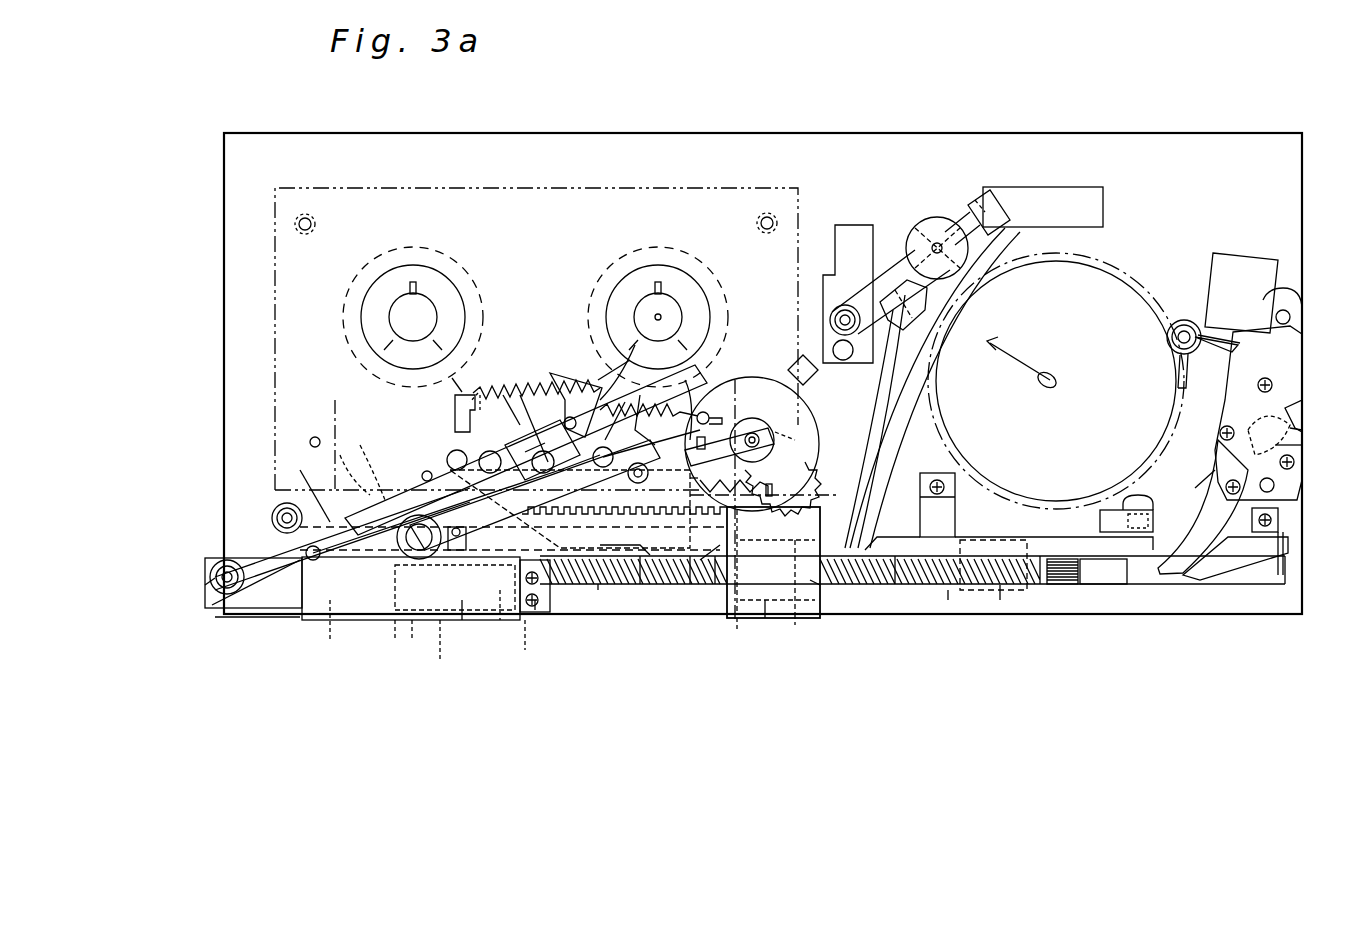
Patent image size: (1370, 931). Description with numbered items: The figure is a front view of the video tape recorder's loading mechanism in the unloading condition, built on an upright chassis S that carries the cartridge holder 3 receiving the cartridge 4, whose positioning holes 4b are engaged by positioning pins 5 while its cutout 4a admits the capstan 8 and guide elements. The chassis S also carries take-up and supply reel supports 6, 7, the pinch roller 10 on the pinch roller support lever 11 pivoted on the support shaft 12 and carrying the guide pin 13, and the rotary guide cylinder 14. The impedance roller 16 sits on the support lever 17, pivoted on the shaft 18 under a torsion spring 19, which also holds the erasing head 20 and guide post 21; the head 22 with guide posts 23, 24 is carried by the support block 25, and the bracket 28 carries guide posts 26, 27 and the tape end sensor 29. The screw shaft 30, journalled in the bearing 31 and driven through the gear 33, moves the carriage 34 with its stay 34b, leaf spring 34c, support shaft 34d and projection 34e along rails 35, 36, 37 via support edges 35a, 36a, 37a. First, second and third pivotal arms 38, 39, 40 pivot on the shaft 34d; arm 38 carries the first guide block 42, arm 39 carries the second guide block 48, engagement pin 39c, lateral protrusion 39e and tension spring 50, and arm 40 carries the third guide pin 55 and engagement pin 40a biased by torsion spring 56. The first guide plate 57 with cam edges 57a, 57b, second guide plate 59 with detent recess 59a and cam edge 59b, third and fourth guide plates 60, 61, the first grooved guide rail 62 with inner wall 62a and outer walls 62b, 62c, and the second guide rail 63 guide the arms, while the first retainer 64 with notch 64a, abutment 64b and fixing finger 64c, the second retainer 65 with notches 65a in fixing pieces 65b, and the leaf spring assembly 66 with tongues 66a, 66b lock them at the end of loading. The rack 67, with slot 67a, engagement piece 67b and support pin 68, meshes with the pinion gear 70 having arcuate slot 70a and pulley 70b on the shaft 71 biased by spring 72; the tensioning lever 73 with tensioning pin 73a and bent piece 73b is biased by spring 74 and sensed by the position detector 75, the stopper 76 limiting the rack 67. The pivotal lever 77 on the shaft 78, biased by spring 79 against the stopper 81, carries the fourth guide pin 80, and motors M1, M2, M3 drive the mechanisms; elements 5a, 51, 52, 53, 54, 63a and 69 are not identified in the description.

The upright chassis S is at (931, 132).
The cartridge holder 3 is at (1012, 552).
The video tape cartridge 4 is at (272, 266).
The cutout 4a is at (385, 460).
The positioning holes 4b is at (303, 218).
The positioning pins 5 is at (311, 218).
The pin 5a is at (309, 442).
The take-up reel support 6 is at (362, 318).
The supply reel support 7 is at (632, 280).
The capstan 8 is at (447, 440).
The pinch roller 10 is at (408, 560).
The pinch roller support lever 11 is at (312, 446).
The support shaft 12 is at (280, 503).
The guide pin 13 is at (446, 600).
The upper or rotary guide cylinder 14 is at (1140, 455).
The impedance roller 16 is at (922, 229).
The pivotable support lever 17 is at (880, 292).
The shaft 18 is at (833, 316).
The torsion spring 19 is at (855, 300).
The magnetic erasing head 20 is at (946, 310).
The fixed guide post 21 is at (833, 348).
The magnetic recording and/or reproducing head 22 is at (1275, 418).
The guide post 23 is at (1220, 420).
The guide post 24 is at (1276, 486).
The support block 25 is at (1272, 446).
The guide post 26 is at (738, 622).
The guide post 27 is at (822, 587).
The L-shaped bracket 28 is at (766, 602).
The tape end sensor 29 is at (795, 620).
The screw shaft 30 is at (695, 585).
The bearing 31 is at (1108, 585).
The gear 33 is at (1060, 585).
The carriage 34 is at (239, 602).
The stay 34b is at (525, 632).
The leaf spring 34c is at (440, 665).
The support shaft 34d is at (216, 576).
The projection 34e is at (534, 608).
The rail 35 is at (962, 600).
The support edge 35a is at (1000, 592).
The rail 36 is at (628, 590).
The support edge 36a is at (655, 568).
The rail 37 is at (960, 540).
The support edge 37a is at (895, 585).
The first pivotal arm 38 is at (598, 383).
The second pivotal arm 39 is at (374, 492).
The engagement pin 39c is at (478, 392).
The lateral protrusion 39e is at (330, 625).
The third pivotal arm 40 is at (222, 610).
The engagement pin 40a is at (256, 585).
The first guide block 42 is at (646, 410).
The second guide block 48 is at (546, 382).
The tension spring 50 is at (412, 632).
The link 51 is at (641, 396).
The plate 52 is at (586, 370).
The spring 53 is at (690, 412).
The pin 54 is at (480, 393).
The third guide pin 55 is at (456, 378).
The torsion spring 56 is at (230, 560).
The first guide plate 57 is at (346, 624).
The first cam edge 57a is at (358, 573).
The second cam edge 57b is at (461, 612).
The second guide plate 59 is at (552, 590).
The detent recess 59a is at (425, 470).
The third cam edge 59b is at (599, 592).
The third guide plate 60 is at (395, 632).
The fourth guide plate 61 is at (1240, 566).
The first grooved guide rail 62 is at (935, 465).
The inner wall 62a is at (890, 440).
The first outer wall 62b is at (689, 398).
The second outer wall 62c is at (908, 422).
The second guide rail 63 is at (1170, 578).
The lever portion 63a is at (1205, 490).
The first retainer 64 is at (1082, 187).
The V-shaped notch 64a is at (1000, 216).
The abutment 64b is at (962, 216).
The first fixing finger 64c is at (967, 205).
The second retainer 65 is at (1246, 254).
The V-shaped notch 65a is at (1236, 340).
The fixing pieces 65b is at (1253, 330).
The leaf spring assembly 66 is at (1175, 320).
The first tongue 66a is at (1228, 360).
The second tongue 66b is at (1176, 366).
The rack 67 is at (716, 586).
The axially extending slot 67a is at (713, 572).
The engagement piece 67b is at (500, 602).
The support pin 68 is at (773, 562).
The gear 69 is at (802, 485).
The pinion gear 70 is at (757, 373).
The arcuate slot 70a is at (732, 383).
The coaxial pulley 70b is at (798, 443).
The shaft 71 is at (762, 436).
The tension spring 72 is at (675, 312).
The tensioning lever 73 is at (725, 432).
The tensioning pin 73a is at (686, 452).
The bent piece 73b is at (792, 434).
The tension spring 74 is at (760, 482).
The photoelectrical position detector 75 is at (816, 372).
The stopper 76 is at (1100, 522).
The pivotal lever 77 is at (633, 342).
The shaft 78 is at (625, 400).
The spring 79 is at (502, 393).
The fourth guide pin 80 is at (455, 398).
The stopper 81 is at (520, 393).
The motor M1 is at (640, 248).
The motor M2 is at (400, 248).
The motor M3 is at (952, 602).